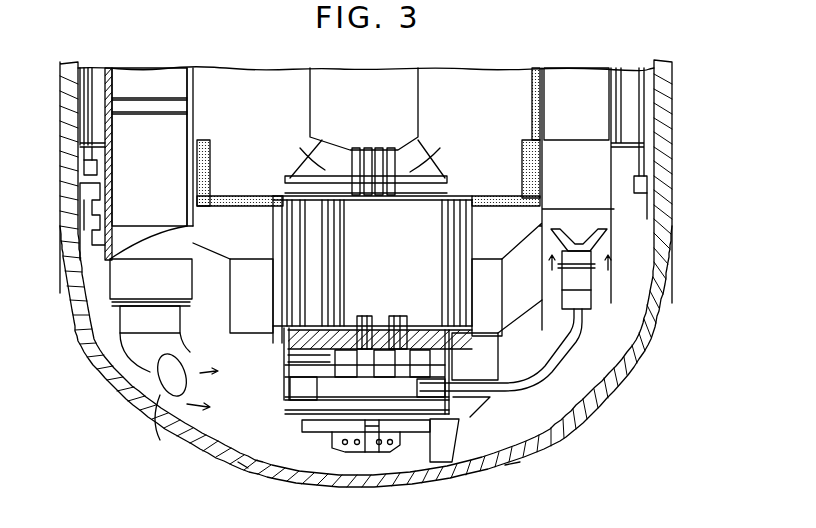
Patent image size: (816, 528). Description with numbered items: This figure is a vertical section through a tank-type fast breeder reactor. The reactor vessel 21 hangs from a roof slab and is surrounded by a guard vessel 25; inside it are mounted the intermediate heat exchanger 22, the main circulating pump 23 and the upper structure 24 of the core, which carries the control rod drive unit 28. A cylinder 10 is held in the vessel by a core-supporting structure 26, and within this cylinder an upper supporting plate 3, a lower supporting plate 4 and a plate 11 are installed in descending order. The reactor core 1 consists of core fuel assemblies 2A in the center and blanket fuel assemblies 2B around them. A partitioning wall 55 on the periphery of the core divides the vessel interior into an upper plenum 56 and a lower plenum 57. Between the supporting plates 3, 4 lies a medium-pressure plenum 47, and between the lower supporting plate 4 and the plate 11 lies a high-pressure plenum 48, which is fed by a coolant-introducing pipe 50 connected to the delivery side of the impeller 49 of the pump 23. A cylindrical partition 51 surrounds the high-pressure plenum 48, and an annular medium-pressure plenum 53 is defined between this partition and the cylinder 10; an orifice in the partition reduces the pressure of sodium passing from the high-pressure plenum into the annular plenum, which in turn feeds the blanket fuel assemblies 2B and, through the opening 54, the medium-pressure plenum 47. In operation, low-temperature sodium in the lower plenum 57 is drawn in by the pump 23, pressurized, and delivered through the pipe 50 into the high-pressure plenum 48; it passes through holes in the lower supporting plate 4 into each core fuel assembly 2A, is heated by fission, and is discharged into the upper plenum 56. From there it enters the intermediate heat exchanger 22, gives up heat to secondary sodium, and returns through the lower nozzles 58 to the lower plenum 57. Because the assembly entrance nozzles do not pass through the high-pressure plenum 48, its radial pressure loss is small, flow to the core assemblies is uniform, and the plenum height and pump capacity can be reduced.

The reactor core 1 is at (413, 237).
The core fuel assembly 2A is at (344, 270).
The blanket fuel assembly 2B is at (440, 336).
The upper supporting plate 3 is at (379, 333).
The lower supporting plate 4 is at (330, 402).
The cylinder 10 is at (240, 464).
The plate 11 is at (432, 402).
The reactor vessel 21 is at (614, 382).
The intermediate heat exchanger 22 is at (150, 88).
The main circulating pump 23 is at (532, 85).
The upper structure of the core 24 is at (310, 87).
The guard vessel 25 is at (512, 465).
The core-supporting structure 26 is at (218, 258).
The control rod drive unit 28 is at (410, 158).
The medium-pressure plenum 47 is at (310, 358).
The high-pressure plenum 48 is at (394, 392).
The impeller 49 is at (595, 240).
The coolant-introducing pipe 50 is at (544, 365).
The cylindrical partition 51 is at (310, 387).
The annular medium-pressure plenum 53 is at (300, 392).
The opening 54 is at (297, 368).
The partitioning wall 55 is at (502, 196).
The upper plenum 56 is at (276, 130).
The lower plenum 57 is at (528, 432).
The lower nozzle 58 is at (167, 394).